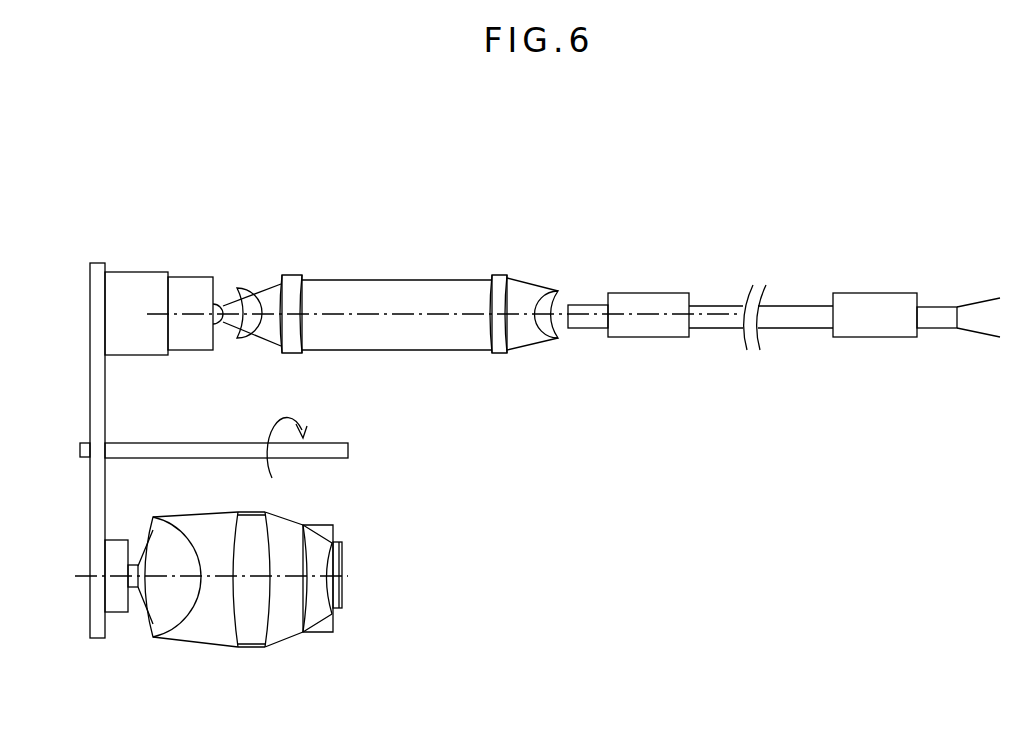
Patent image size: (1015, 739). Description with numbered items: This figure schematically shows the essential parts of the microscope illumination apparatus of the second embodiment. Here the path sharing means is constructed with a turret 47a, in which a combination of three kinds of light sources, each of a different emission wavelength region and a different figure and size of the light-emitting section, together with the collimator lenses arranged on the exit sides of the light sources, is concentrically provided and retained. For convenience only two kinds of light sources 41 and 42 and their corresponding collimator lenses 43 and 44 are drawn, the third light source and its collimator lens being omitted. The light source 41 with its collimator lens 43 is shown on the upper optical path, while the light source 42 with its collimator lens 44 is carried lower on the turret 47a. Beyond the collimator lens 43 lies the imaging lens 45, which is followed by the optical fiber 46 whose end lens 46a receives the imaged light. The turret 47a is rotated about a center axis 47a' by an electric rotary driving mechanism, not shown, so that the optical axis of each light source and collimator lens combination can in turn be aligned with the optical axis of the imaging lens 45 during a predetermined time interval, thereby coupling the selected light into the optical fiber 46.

The light source 41 is at (190, 285).
The light source 42 is at (117, 540).
The collimator lens 43 is at (220, 265).
The collimator lens 44 is at (142, 668).
The imaging lens 45 is at (482, 265).
The optical fiber 46 is at (572, 265).
The fiber end lens 46a is at (562, 323).
The turret 47a is at (66, 451).
The center axis 47a' is at (254, 435).